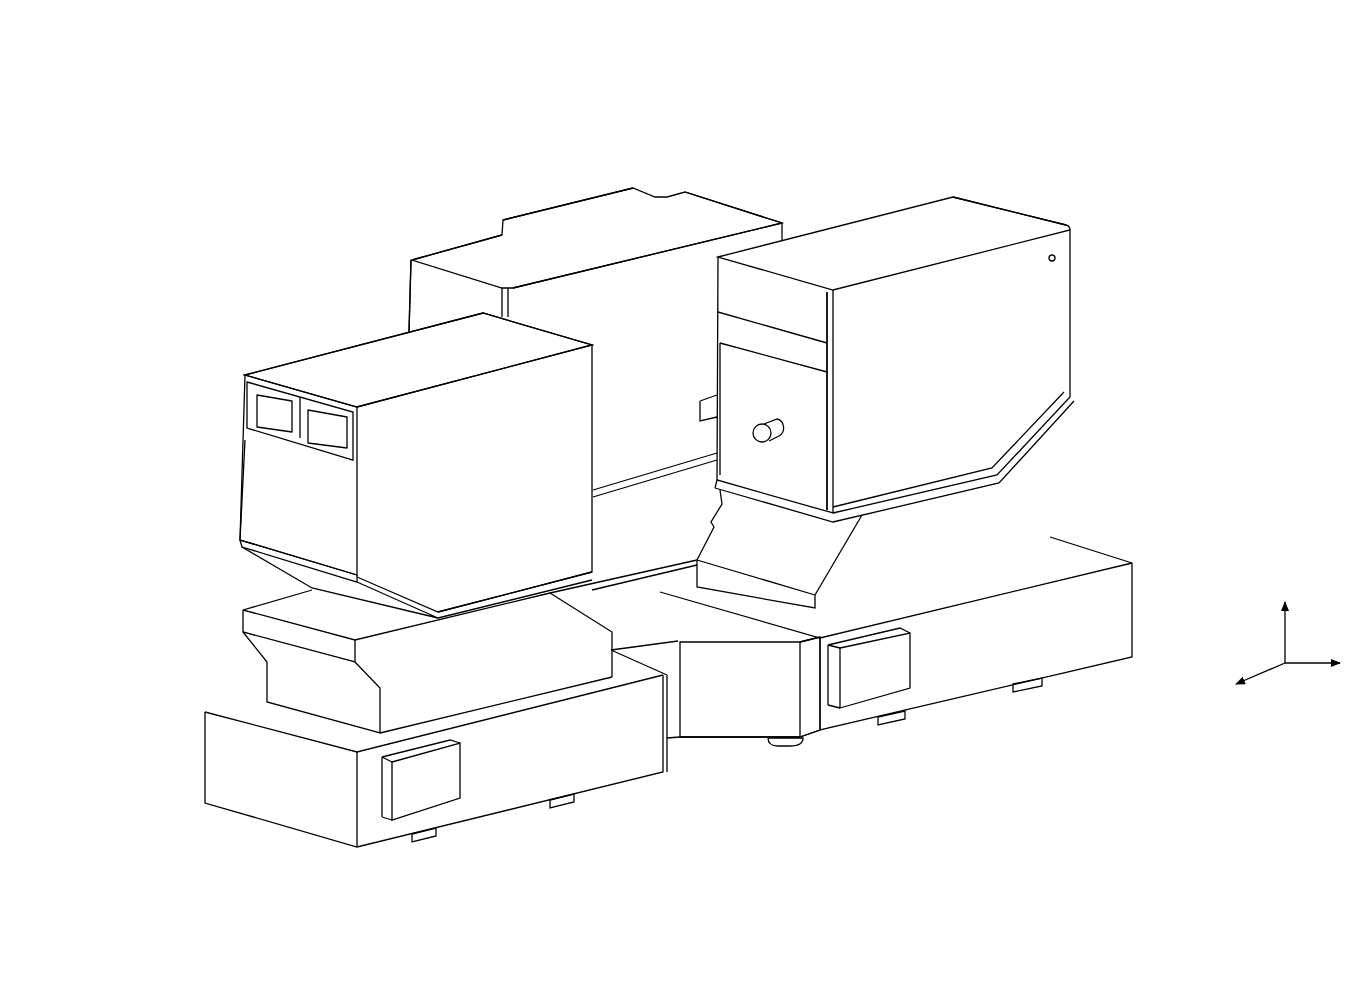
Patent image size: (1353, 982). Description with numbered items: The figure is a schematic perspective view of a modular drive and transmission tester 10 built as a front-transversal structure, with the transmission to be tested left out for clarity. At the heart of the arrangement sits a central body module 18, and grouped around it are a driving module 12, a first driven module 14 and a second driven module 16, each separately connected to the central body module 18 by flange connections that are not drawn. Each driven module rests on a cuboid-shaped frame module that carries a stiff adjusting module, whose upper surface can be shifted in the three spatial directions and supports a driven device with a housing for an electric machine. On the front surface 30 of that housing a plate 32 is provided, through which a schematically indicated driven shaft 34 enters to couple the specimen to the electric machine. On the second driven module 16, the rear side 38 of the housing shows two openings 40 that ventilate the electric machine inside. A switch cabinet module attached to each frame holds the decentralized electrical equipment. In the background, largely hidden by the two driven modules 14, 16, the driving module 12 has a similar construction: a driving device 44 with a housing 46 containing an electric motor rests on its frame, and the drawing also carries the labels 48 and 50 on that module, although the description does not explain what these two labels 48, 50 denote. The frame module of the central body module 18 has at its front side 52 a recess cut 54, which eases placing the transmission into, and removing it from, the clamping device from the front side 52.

The transmission tester 10 is at (1100, 177).
The driving module 12 is at (664, 186).
The first driven module 14 is at (1172, 565).
The second driven module 16 is at (214, 680).
The central body module 18 is at (756, 741).
The front surface 30 is at (828, 300).
The plate 32 is at (763, 387).
The driven shaft 34 is at (772, 440).
The rear side 38 is at (268, 454).
The openings 40 is at (270, 408).
The driving device 44 is at (727, 196).
The housing 46 is at (592, 220).
The front step of bed 48 is at (438, 285).
The side edge of bed 50 is at (404, 304).
The front side 52 is at (808, 726).
The recess cut 54 is at (718, 746).